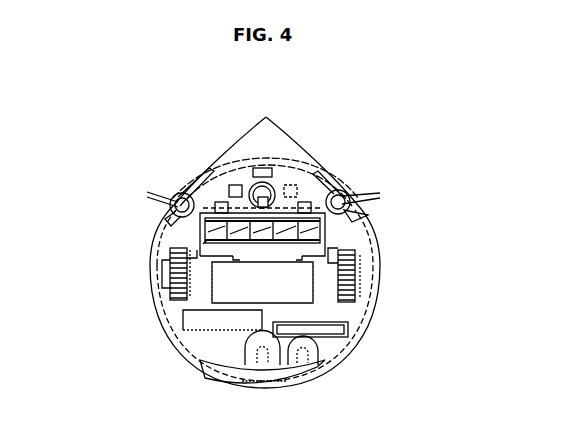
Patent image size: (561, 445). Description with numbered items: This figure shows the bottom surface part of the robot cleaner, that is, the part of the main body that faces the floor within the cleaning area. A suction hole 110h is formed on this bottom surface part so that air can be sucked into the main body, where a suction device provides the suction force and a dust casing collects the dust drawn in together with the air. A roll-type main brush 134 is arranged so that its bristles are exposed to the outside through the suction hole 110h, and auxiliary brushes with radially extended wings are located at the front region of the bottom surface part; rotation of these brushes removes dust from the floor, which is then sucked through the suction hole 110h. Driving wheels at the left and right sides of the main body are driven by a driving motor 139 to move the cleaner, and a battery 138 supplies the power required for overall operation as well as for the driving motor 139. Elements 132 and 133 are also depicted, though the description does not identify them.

The cover/top sensor 132 is at (260, 168).
The sensor unit 133 is at (239, 198).
The main brush 134 is at (318, 235).
The suction hole 110h is at (205, 242).
The battery 138 is at (330, 331).
The driving motor 139 is at (302, 360).